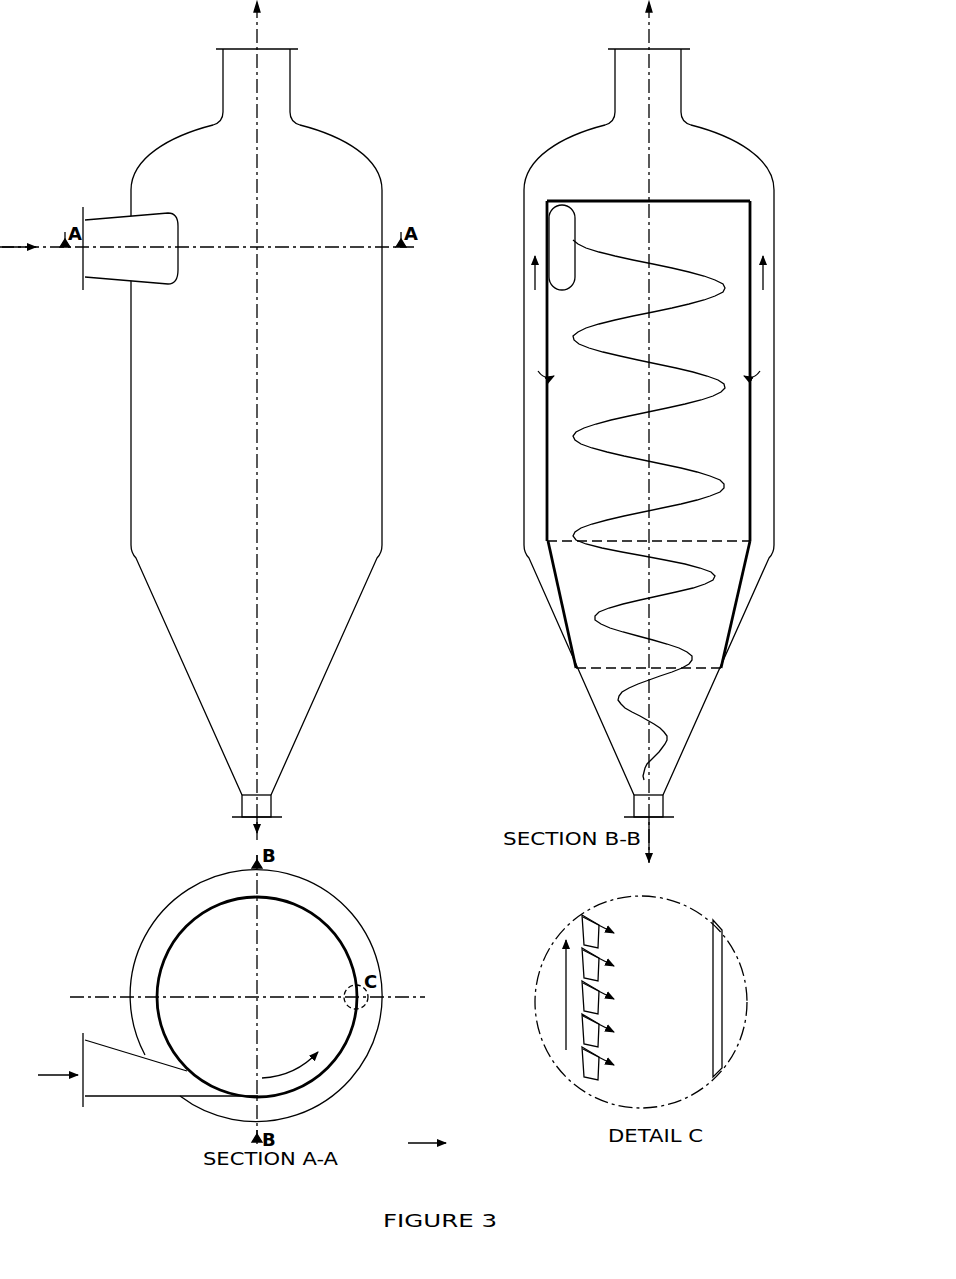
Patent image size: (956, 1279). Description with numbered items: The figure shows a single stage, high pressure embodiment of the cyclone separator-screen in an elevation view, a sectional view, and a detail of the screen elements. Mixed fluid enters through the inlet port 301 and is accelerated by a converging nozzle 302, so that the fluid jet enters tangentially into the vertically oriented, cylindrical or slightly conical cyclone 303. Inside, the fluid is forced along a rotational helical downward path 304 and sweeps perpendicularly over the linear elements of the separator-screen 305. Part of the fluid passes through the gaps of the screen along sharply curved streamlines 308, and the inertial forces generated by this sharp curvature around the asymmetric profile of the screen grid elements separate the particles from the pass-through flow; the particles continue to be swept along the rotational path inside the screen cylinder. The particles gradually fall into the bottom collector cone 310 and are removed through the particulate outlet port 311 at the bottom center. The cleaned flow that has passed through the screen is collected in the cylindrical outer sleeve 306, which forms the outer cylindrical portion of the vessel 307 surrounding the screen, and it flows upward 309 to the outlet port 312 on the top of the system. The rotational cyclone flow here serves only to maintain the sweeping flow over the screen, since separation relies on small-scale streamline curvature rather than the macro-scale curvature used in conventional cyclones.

The inlet port 301 is at (83, 280).
The converging nozzle 302 is at (153, 1086).
The cyclone 303 is at (683, 334).
The rotational helical downward path 304 is at (626, 316).
The separator-screen 305 is at (550, 418).
The cylindrical outer sleeve 306 is at (534, 516).
The outer vessel shell 307 is at (131, 438).
The sharply curved streamlines 308 is at (553, 377).
The upward flow 309 is at (535, 282).
The bottom collector cone 310 is at (190, 678).
The particulate outlet port 311 is at (250, 819).
The outlet port 312 is at (246, 49).